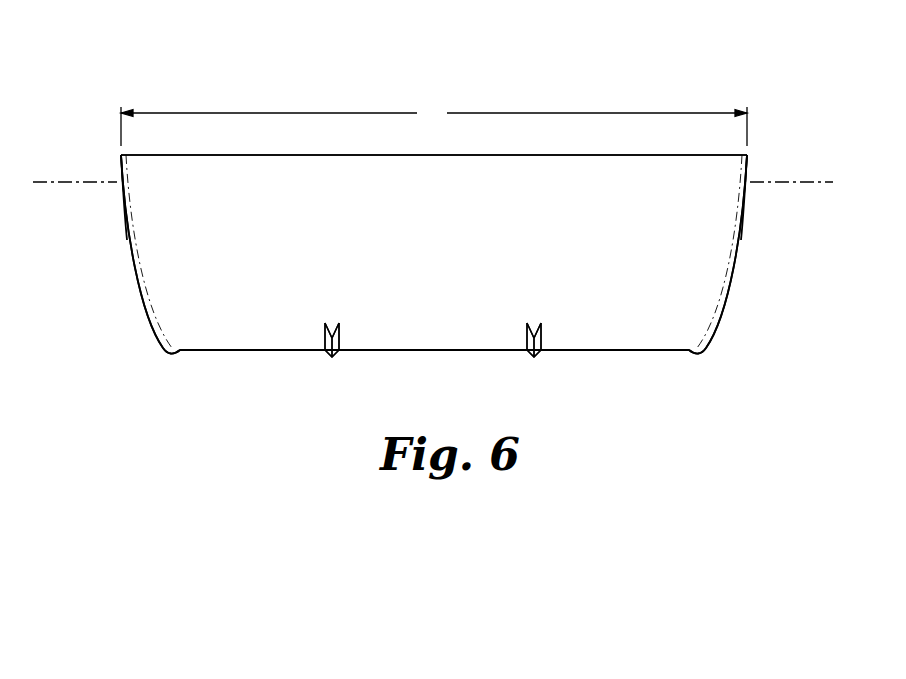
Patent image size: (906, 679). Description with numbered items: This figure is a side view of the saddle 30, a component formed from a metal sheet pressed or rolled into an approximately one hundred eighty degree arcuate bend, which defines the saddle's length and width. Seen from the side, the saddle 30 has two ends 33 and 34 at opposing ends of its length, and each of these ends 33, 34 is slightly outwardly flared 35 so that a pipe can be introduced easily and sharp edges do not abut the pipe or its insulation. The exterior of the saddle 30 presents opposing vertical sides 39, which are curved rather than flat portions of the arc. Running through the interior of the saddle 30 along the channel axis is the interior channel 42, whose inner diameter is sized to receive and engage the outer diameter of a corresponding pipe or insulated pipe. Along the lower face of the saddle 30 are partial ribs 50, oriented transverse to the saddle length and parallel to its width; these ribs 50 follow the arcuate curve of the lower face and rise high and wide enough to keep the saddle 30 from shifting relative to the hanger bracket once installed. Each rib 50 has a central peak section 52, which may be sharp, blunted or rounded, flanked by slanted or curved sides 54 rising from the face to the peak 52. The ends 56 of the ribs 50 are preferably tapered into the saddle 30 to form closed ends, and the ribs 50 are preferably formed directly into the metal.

The saddle 30 is at (579, 88).
The end 33 is at (745, 232).
The end 34 is at (126, 246).
The outwardly flared end portion 35 is at (168, 352).
The vertical sides 39 is at (453, 198).
The interior channel 42 is at (112, 207).
The partial ribs 50 is at (333, 372).
The central peak section 52 is at (334, 356).
The tab side 54 is at (325, 333).
The rib ends 56 is at (331, 322).